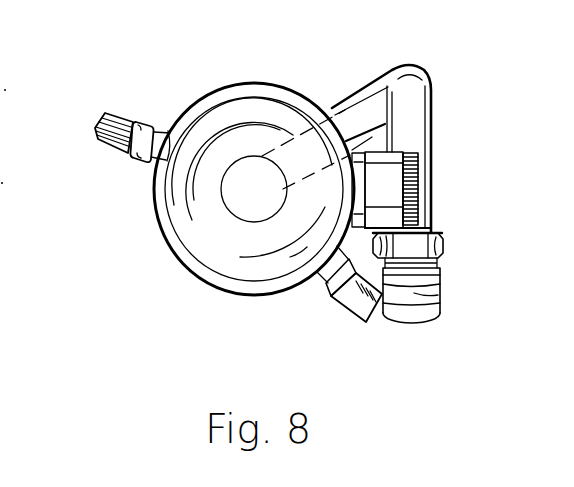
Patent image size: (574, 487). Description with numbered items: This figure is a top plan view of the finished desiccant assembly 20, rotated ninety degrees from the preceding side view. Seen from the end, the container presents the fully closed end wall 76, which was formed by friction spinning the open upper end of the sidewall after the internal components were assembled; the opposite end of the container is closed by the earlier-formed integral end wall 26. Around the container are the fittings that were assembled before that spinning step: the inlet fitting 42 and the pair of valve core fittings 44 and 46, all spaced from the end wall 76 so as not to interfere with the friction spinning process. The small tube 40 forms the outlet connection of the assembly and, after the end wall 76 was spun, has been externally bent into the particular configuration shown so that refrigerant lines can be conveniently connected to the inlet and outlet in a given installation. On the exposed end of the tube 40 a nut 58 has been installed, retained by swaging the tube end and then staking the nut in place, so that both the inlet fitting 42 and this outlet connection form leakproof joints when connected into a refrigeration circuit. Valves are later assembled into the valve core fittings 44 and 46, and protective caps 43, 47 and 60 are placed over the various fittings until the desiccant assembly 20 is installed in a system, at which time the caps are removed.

The desiccant assembly 20 is at (432, 68).
The end wall 26 is at (183, 268).
The tube 40 is at (353, 95).
The inlet fitting 42 is at (390, 146).
The protective cap 43 is at (418, 175).
The valve core fitting 44 is at (131, 168).
The valve core fitting 46 is at (332, 298).
The protective cap 47 is at (115, 111).
The nut 58 is at (443, 248).
The protective cap 60 is at (443, 286).
The end wall 76 is at (205, 201).